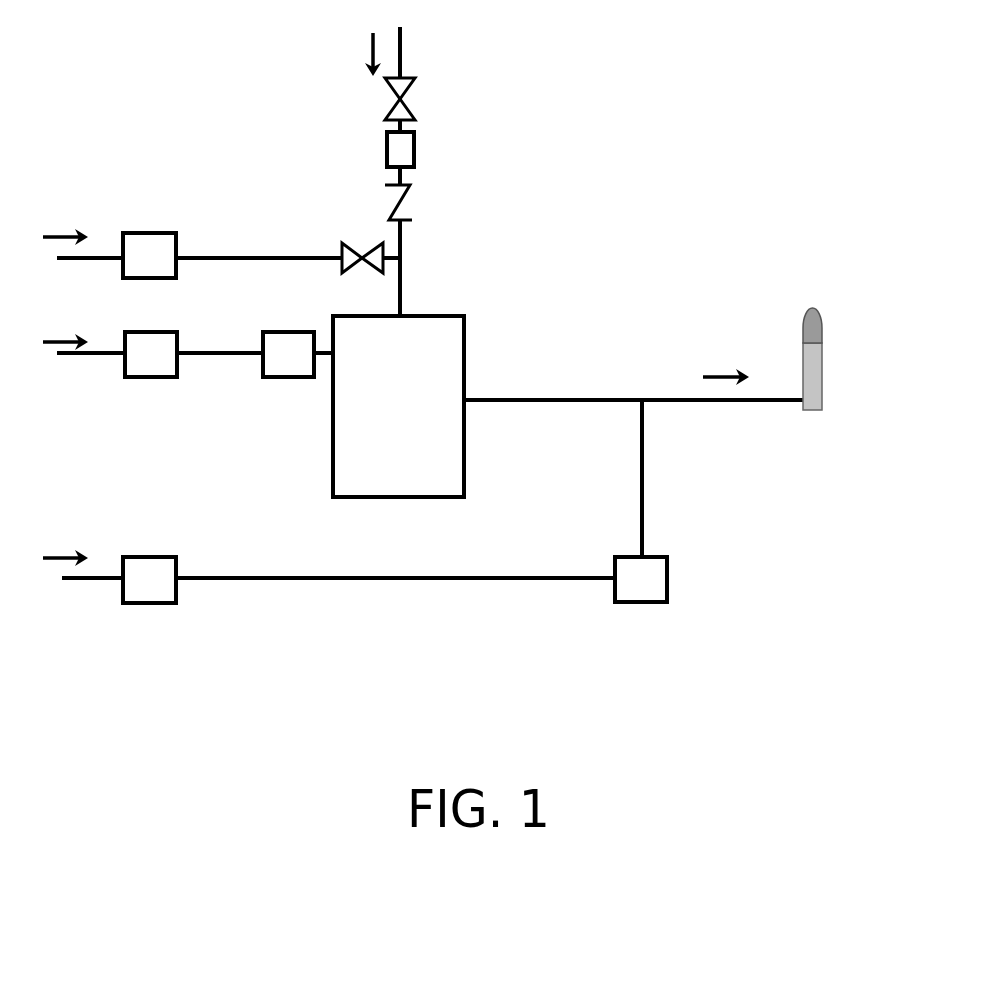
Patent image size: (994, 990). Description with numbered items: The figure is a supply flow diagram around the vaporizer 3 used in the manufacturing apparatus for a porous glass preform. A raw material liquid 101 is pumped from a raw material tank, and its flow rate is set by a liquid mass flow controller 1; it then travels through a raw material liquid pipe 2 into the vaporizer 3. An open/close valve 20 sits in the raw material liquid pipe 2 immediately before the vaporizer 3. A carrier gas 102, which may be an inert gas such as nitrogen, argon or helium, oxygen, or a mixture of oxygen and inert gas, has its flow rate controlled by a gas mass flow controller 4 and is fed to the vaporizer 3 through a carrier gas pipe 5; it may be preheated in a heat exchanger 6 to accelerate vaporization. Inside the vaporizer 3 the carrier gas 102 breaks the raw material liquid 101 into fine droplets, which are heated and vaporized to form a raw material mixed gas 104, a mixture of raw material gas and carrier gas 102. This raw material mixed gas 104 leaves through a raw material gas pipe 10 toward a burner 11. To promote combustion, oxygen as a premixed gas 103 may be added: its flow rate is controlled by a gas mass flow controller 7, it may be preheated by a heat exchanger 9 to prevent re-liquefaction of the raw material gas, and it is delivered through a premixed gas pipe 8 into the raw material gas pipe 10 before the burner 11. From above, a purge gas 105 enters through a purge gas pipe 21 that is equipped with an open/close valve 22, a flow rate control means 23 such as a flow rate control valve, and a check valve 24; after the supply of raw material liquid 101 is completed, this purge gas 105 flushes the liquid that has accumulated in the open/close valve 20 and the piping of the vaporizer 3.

The liquid mass flow controller 1 is at (153, 232).
The raw material liquid pipe 2 is at (273, 255).
The vaporizer 3 is at (437, 310).
The gas mass flow controller 4 is at (152, 378).
The carrier gas pipe 5 is at (222, 355).
The heat exchanger 6 is at (263, 380).
The gas mass flow controller 7 is at (138, 605).
The premixed gas pipe 8 is at (360, 577).
The heat exchanger 9 is at (642, 603).
The raw material gas pipe 10 is at (692, 402).
The burner 11 is at (822, 400).
The open/close valve 20 is at (345, 242).
The purge gas pipe 21 is at (402, 62).
The open/close valve 22 is at (410, 108).
The flow rate control means 23 is at (413, 157).
The check valve 24 is at (410, 212).
The raw material liquid 101 is at (62, 216).
The carrier gas 102 is at (62, 324).
The premixed gas 103 is at (62, 539).
The raw material mixed gas 104 is at (726, 353).
The purge gas 105 is at (353, 47).